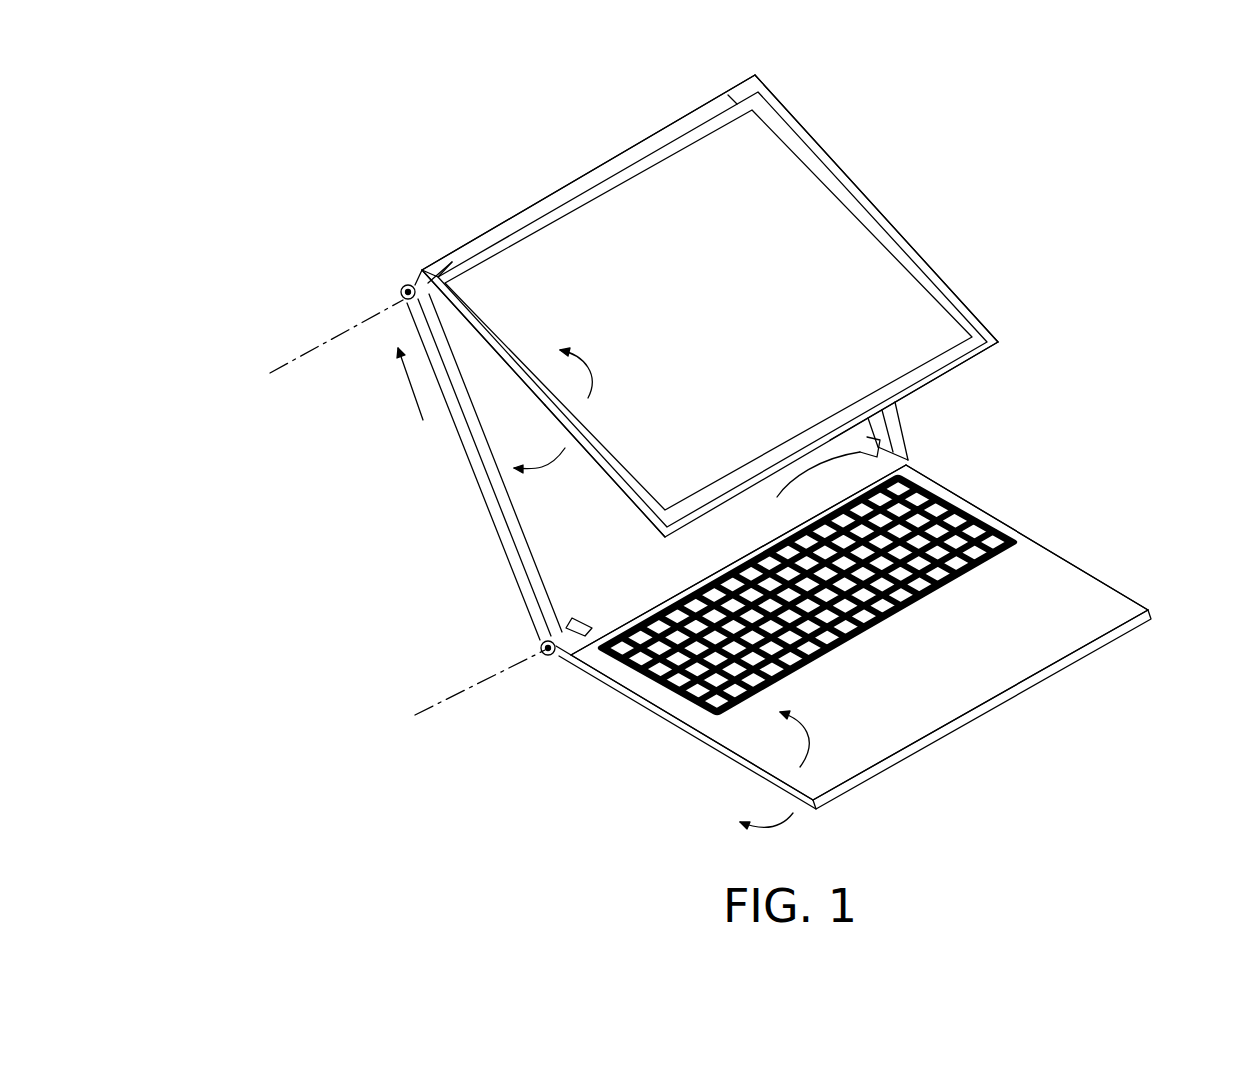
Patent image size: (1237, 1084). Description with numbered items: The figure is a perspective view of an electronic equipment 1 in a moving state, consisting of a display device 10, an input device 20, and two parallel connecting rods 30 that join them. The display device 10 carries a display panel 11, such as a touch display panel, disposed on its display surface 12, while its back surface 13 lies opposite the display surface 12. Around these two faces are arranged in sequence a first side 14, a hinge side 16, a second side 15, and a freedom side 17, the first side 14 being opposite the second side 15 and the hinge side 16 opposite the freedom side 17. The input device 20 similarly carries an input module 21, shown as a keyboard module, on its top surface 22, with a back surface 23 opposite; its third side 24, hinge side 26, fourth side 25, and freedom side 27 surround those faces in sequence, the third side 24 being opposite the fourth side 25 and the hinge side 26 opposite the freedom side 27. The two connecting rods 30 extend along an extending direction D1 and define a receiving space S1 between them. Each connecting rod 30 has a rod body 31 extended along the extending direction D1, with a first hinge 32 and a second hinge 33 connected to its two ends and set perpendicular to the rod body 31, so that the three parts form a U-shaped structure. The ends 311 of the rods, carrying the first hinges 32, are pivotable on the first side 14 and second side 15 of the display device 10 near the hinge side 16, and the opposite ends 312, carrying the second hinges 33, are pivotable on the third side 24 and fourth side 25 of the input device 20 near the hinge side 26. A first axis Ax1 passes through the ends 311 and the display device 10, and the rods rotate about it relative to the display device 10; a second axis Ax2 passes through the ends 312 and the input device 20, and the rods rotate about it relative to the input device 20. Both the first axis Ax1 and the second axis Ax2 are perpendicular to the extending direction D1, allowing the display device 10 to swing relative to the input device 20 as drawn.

The electronic equipment 1 is at (1063, 111).
The display device 10 is at (933, 260).
The display panel 11 is at (865, 223).
The display surface 12 is at (813, 163).
The back surface 13 is at (622, 500).
The first side 14 is at (628, 505).
The second side 15 is at (970, 308).
The hinge side 16 is at (570, 192).
The freedom side 17 is at (965, 362).
The input device 20 is at (1042, 536).
The input module 21 is at (838, 672).
The top surface 22 is at (969, 680).
The back surface 23 is at (610, 688).
The third side 24 is at (740, 765).
The fourth side 25 is at (1095, 577).
The hinge side 26 is at (907, 462).
The freedom side 27 is at (1091, 655).
The connecting rod 30 is at (900, 425).
The rod body 31 is at (473, 458).
The end 311 is at (399, 282).
The end 312 is at (545, 668).
The first hinge 32 is at (423, 260).
The second hinge 33 is at (572, 620).
The first axis Ax1 is at (300, 355).
The second axis Ax2 is at (420, 703).
The extending direction D1 is at (395, 384).
The receiving space S1 is at (490, 430).